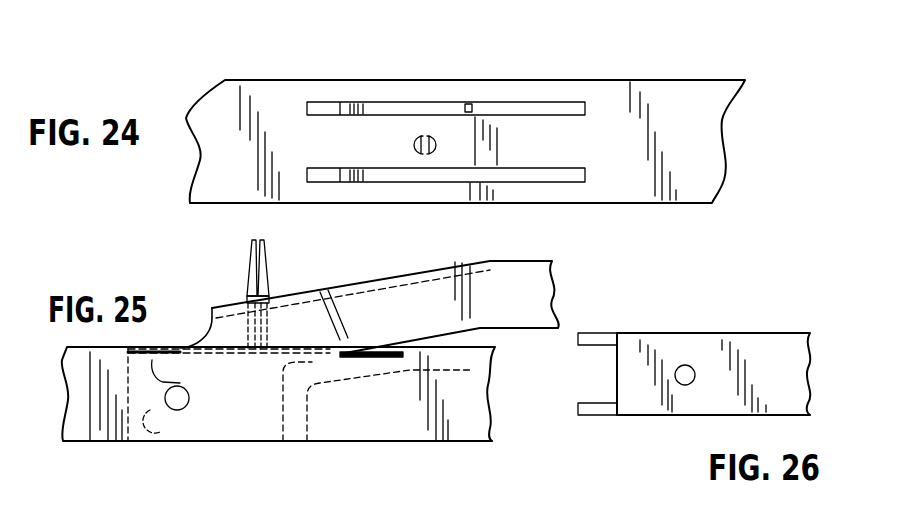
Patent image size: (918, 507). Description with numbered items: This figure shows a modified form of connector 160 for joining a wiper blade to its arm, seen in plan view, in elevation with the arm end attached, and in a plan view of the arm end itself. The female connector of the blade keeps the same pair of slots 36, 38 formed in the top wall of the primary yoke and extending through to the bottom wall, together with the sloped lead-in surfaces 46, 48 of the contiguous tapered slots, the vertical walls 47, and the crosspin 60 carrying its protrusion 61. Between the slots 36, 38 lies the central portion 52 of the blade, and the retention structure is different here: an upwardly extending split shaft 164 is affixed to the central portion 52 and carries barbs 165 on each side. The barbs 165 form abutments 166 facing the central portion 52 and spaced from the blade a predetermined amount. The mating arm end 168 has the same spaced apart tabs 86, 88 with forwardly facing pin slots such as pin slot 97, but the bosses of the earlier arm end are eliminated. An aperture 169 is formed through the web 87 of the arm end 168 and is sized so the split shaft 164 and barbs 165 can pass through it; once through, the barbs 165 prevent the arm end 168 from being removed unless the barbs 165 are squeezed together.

In FIG. 24, the slot 36 is at (455, 104).
In FIG. 24, the slot 38 is at (453, 203).
In FIG. 25, the slot 38 is at (252, 441).
In FIG. 24, the sloped lead-in surface 46 is at (540, 108).
In FIG. 24, the vertical wall 47 is at (468, 106).
In FIG. 25, the vertical wall 47 is at (285, 442).
In FIG. 24, the sloped lead-in surface 48 is at (565, 184).
In FIG. 25, the sloped lead-in surface 48 is at (347, 343).
In FIG. 24, the central portion 52 is at (385, 122).
In FIG. 24, the crosspin 60 is at (352, 102).
In FIG. 25, the crosspin 60 is at (180, 400).
In FIG. 25, the protrusion 61 is at (160, 437).
In FIG. 26, the tab 86 is at (600, 338).
In FIG. 24, the web 87 is at (442, 176).
In FIG. 25, the web 87 is at (433, 273).
In FIG. 26, the web 87 is at (705, 350).
In FIG. 26, the tab 88 is at (598, 410).
In FIG. 25, the pin slot 97 is at (157, 382).
In FIG. 25, the connector 160 is at (216, 294).
In FIG. 24, the split shaft 164 is at (426, 156).
In FIG. 25, the split shaft 164 is at (270, 318).
In FIG. 24, the barbs 165 is at (414, 146).
In FIG. 25, the barbs 165 is at (255, 276).
In FIG. 25, the abutments 166 is at (237, 302).
In FIG. 25, the arm end 168 is at (562, 282).
In FIG. 26, the arm end 168 is at (816, 331).
In FIG. 26, the aperture 169 is at (686, 386).